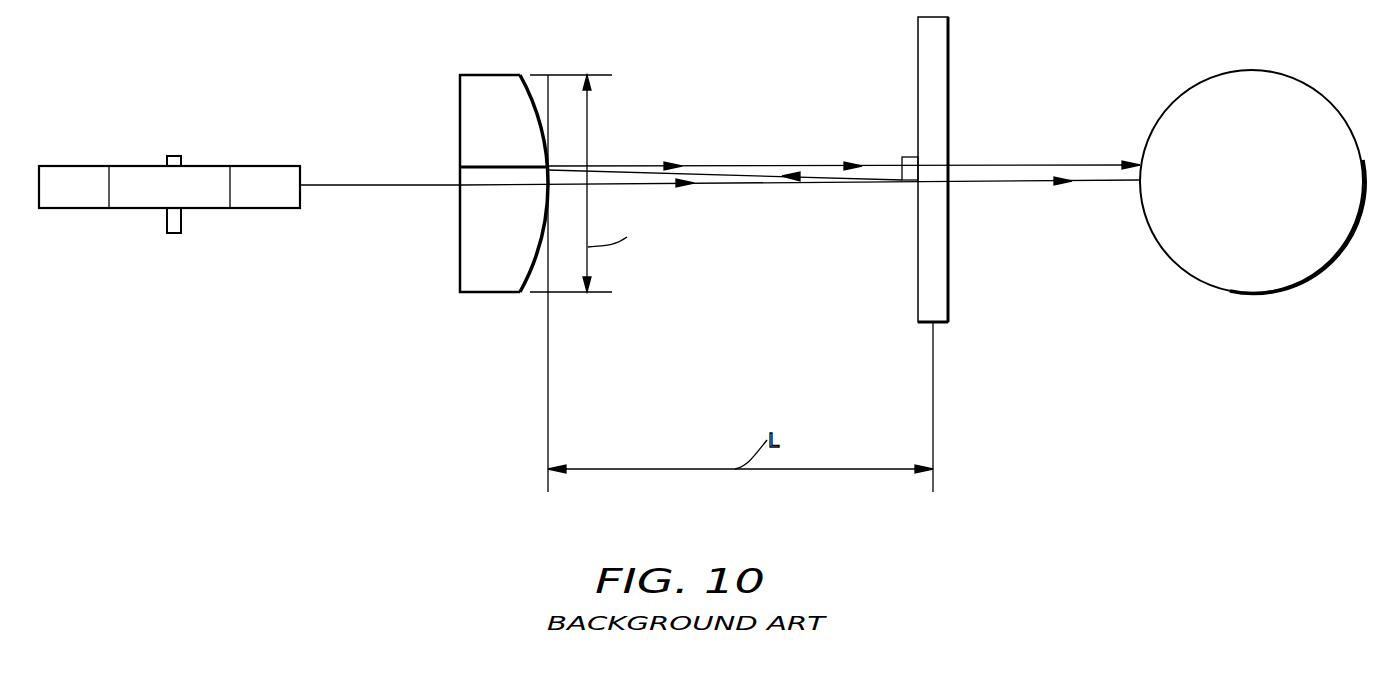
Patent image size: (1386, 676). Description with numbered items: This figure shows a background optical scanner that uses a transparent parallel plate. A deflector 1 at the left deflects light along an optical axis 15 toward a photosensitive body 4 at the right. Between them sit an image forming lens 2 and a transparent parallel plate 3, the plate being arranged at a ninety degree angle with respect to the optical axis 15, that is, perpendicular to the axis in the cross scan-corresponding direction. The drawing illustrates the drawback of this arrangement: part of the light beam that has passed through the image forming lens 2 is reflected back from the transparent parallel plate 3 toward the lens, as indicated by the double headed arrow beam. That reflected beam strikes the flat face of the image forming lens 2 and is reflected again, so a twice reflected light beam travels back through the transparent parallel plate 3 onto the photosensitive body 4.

The deflector 1 is at (250, 166).
The optical axis 15 is at (393, 185).
The image forming lens 2 is at (488, 77).
The transparent parallel plate 3 is at (948, 82).
The photosensitive body 4 is at (1165, 252).